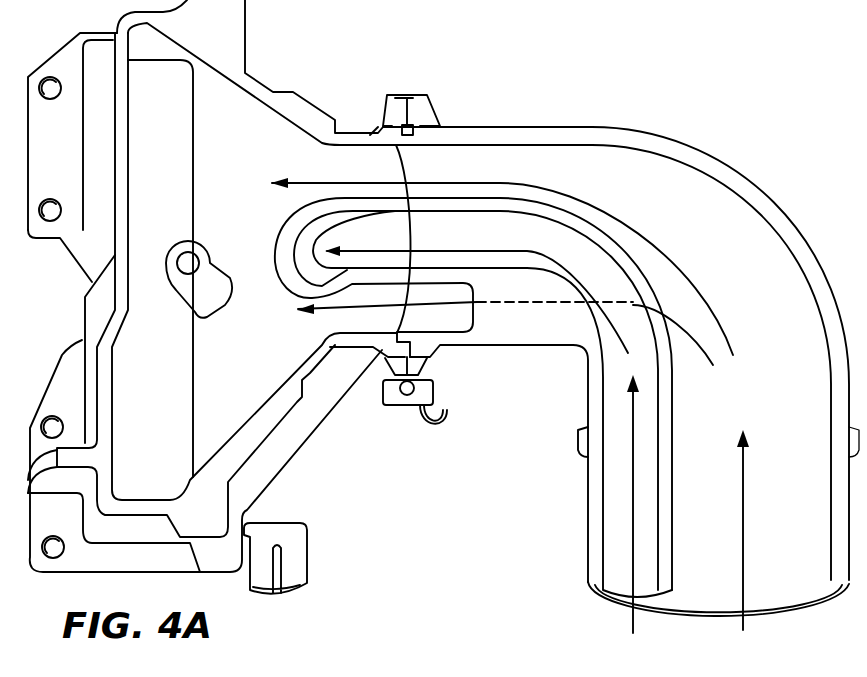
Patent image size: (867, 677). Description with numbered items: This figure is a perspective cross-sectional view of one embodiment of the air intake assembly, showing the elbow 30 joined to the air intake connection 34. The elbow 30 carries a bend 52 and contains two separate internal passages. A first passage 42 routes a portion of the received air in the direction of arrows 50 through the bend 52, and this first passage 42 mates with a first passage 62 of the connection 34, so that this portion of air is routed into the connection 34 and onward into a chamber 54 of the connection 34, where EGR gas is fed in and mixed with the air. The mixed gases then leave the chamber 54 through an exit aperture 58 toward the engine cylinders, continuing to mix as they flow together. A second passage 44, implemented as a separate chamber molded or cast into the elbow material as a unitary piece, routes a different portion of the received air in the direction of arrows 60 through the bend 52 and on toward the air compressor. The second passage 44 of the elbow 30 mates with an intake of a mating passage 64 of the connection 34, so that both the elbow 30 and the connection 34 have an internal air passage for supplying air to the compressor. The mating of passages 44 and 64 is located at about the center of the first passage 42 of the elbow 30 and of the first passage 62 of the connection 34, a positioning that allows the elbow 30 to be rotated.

The elbow 30 is at (697, 152).
The air intake connection 34 is at (260, 127).
The first passage 42 is at (774, 550).
The second passage 44 is at (498, 223).
The arrows 50 is at (443, 303).
The bend 52 is at (768, 188).
The chamber 54 is at (229, 364).
The exit aperture 58 is at (152, 364).
The arrows 60 is at (634, 630).
The first passage 62 is at (361, 322).
The mating passage 64 is at (382, 233).